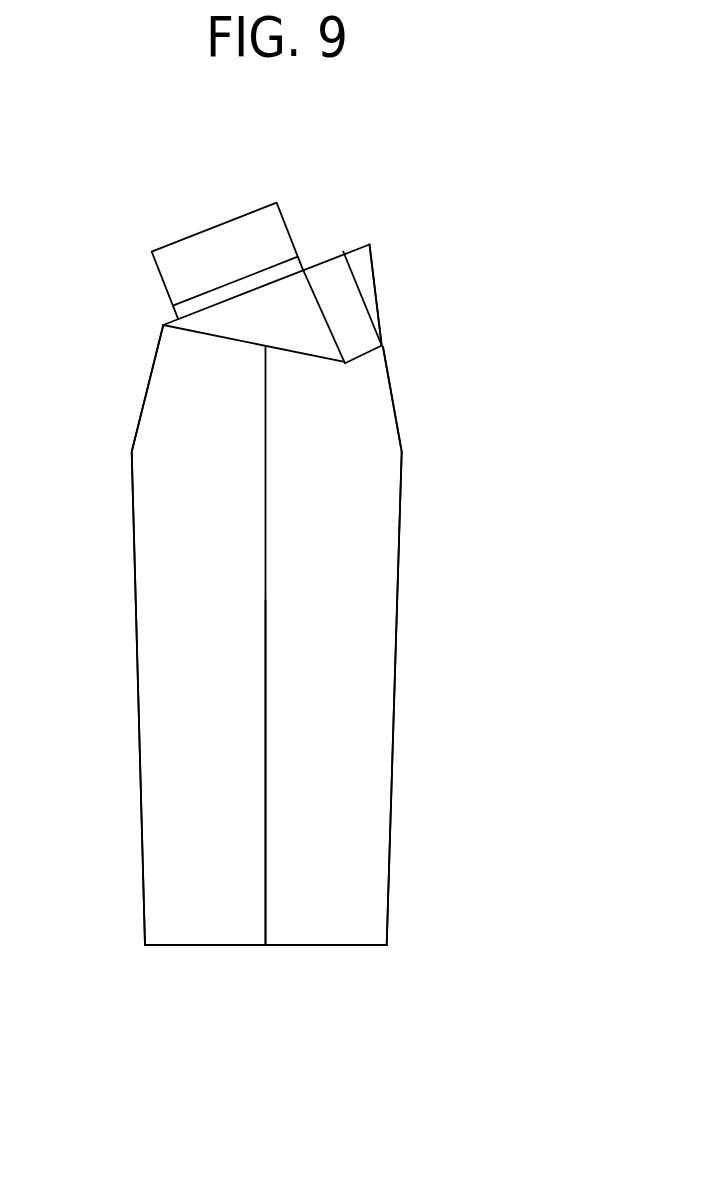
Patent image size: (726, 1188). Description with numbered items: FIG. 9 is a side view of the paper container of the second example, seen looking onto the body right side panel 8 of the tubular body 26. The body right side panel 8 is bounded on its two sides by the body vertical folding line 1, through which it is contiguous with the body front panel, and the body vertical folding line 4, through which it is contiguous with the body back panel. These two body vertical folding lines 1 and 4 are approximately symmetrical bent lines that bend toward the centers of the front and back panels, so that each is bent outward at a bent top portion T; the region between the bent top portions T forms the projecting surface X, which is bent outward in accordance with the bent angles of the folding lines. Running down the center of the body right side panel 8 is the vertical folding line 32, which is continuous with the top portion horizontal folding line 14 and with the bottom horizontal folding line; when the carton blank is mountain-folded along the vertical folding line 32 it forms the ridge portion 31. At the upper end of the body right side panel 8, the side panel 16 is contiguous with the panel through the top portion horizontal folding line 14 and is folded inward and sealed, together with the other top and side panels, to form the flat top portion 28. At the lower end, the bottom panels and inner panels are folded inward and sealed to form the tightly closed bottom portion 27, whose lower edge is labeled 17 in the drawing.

The body vertical folding line 1 is at (137, 715).
The body vertical folding line 4 is at (393, 715).
The body right side panel 8 is at (211, 731).
The top portion horizontal folding line 14 is at (237, 293).
The side panel 16 is at (308, 327).
The bottom edge 17 is at (302, 947).
The tubular body 26 is at (409, 359).
The bottom portion 27 is at (188, 948).
The top portion 28 is at (328, 226).
The ridge portion 31 is at (267, 612).
The vertical folding line 32 is at (267, 660).
The bent top portion T is at (125, 452).
The projecting surface X is at (122, 485).